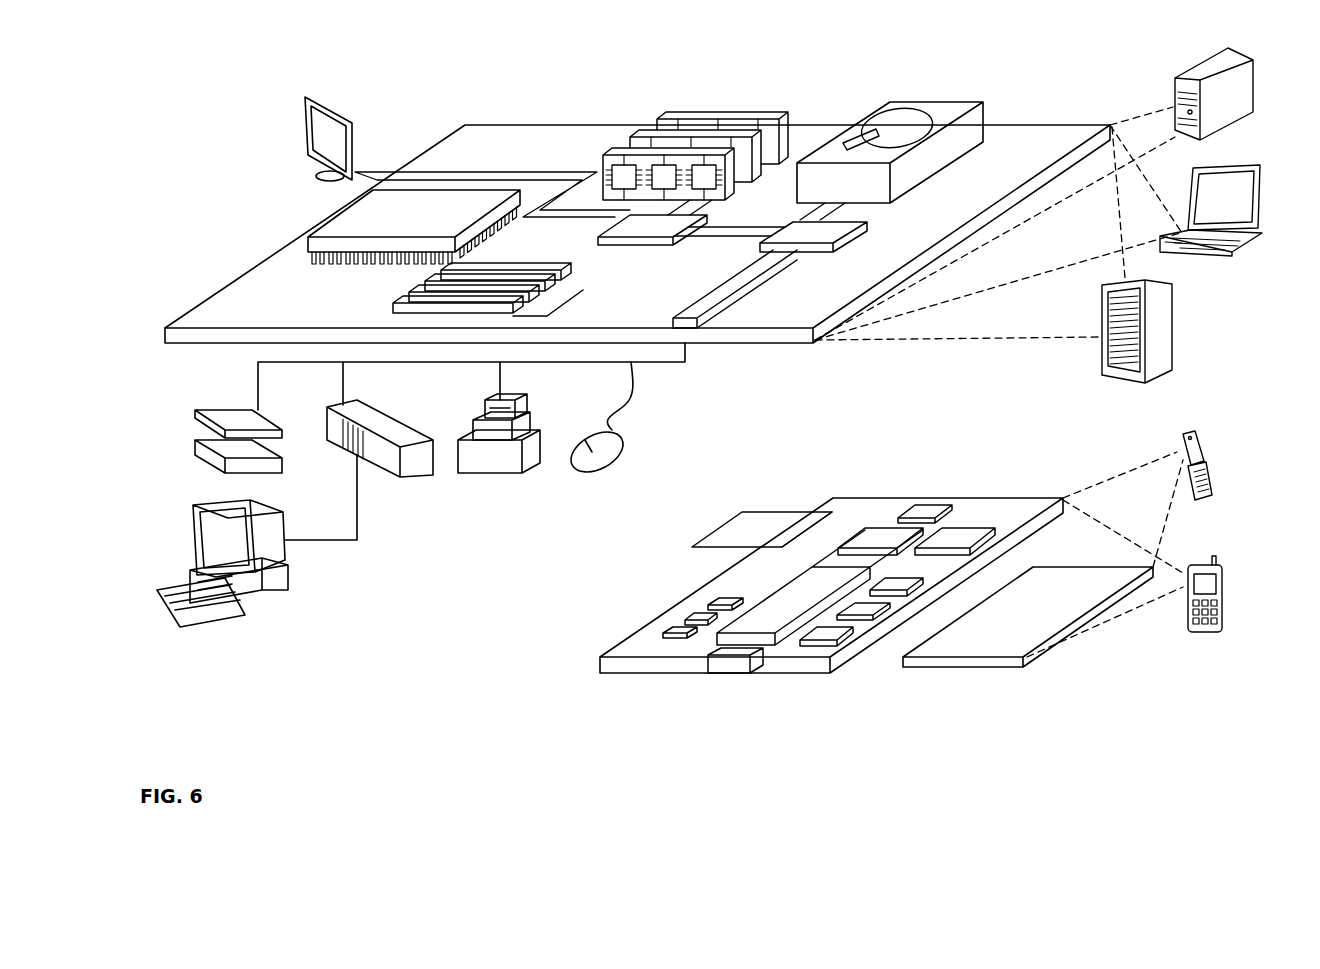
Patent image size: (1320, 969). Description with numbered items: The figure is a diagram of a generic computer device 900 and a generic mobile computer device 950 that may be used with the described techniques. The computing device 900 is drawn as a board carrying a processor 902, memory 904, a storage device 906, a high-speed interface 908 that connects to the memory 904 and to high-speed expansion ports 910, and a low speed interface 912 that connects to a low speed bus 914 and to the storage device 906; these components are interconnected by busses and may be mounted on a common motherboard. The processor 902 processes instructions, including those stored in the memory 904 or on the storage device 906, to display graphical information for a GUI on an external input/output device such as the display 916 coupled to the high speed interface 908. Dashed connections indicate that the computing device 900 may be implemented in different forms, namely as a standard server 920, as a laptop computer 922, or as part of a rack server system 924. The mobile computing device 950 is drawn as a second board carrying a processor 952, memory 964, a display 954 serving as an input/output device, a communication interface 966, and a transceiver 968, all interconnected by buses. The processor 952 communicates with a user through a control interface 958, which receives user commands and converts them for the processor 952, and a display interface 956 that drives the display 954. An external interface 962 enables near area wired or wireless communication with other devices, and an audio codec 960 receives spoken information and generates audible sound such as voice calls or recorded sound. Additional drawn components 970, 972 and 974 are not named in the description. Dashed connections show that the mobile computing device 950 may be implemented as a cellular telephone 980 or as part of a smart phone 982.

The generic computer device 900 is at (427, 76).
The processor 902 is at (330, 222).
The memory 904 is at (722, 119).
The storage device 906 is at (922, 103).
The high-speed interface 908 is at (663, 226).
The high-speed expansion ports 910 is at (420, 296).
The low speed interface 912 is at (788, 228).
The low speed bus 914 is at (690, 313).
The display 916 is at (306, 96).
The standard server 920 is at (1190, 75).
The laptop computer 922 is at (1238, 165).
The rack server system 924 is at (1173, 330).
The generic mobile computer device 950 is at (558, 678).
The processor 952 is at (763, 610).
The display 954 is at (1061, 580).
The display interface 956 is at (847, 637).
The control interface 958 is at (868, 608).
The audio codec 960 is at (903, 582).
The external interface 962 is at (730, 658).
The memory 964 is at (690, 617).
The communication interface 966 is at (880, 530).
The transceiver 968 is at (960, 530).
The GPS receiver module 970 is at (927, 508).
The expansion interface 972 is at (818, 512).
The expansion memory 974 is at (742, 512).
The cellular telephone 980 is at (1190, 430).
The smart phone 982 is at (1199, 565).